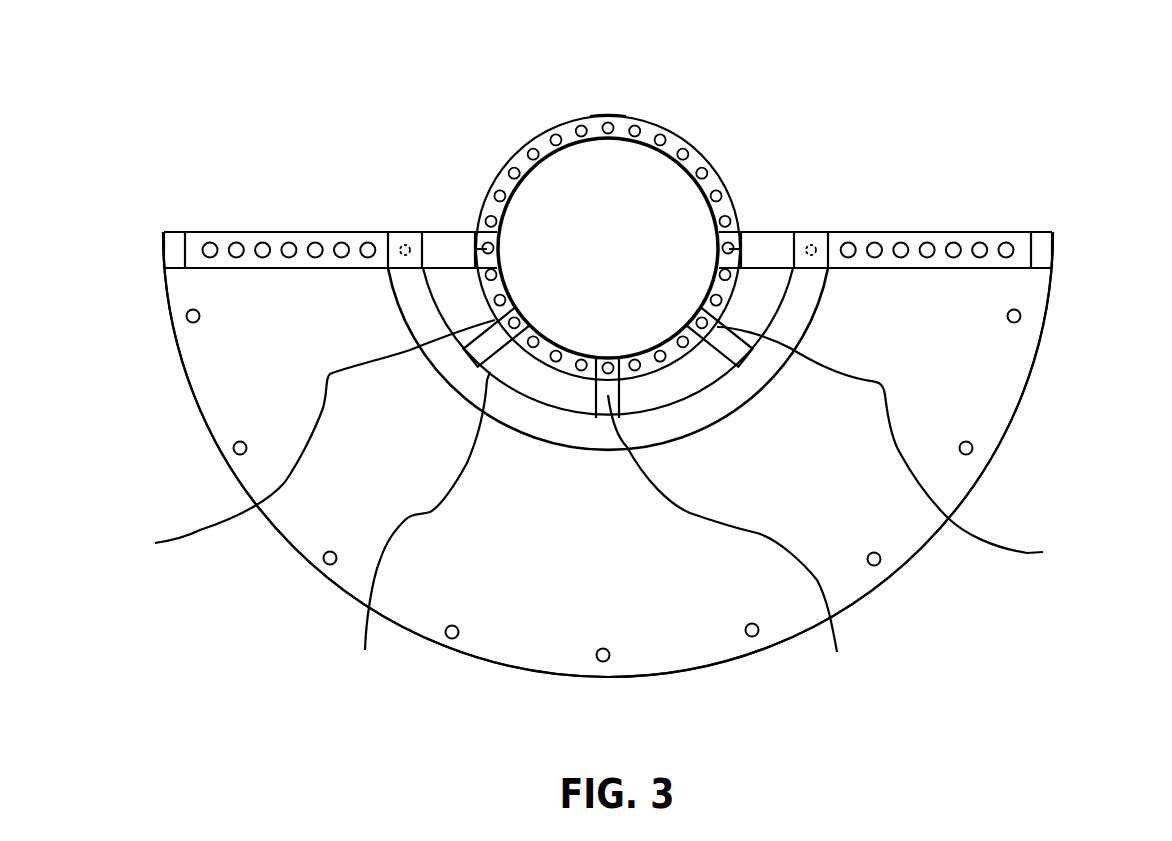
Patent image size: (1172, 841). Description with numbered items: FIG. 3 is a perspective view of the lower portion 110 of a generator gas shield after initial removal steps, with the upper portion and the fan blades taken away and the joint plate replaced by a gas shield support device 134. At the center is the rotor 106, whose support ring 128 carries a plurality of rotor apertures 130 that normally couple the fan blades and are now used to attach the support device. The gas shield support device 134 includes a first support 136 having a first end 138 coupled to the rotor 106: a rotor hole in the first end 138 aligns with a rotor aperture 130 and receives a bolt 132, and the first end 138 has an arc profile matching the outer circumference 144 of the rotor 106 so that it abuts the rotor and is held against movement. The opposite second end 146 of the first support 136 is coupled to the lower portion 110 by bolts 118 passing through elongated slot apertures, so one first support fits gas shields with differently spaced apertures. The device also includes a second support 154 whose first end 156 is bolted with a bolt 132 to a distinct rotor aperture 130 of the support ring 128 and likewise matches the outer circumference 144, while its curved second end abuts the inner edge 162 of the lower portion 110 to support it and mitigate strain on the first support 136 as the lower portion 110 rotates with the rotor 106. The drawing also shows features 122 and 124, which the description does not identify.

The rotor 106 is at (585, 261).
The lower portion 110 is at (594, 557).
The bolts 118 is at (203, 250).
The plate holes 122 is at (753, 638).
The outer edge of plate 124 is at (187, 400).
The support ring 128 is at (641, 134).
The rotor apertures 130 is at (557, 134).
The bolt 132 is at (160, 541).
The gas shield support device 134 is at (460, 131).
The first support 136 is at (192, 238).
The first end 138 is at (472, 214).
The outer circumference 144 is at (612, 116).
The second end 146 is at (258, 219).
The second support 154 is at (730, 352).
The first end 156 is at (513, 355).
The inner edge 162 is at (365, 650).